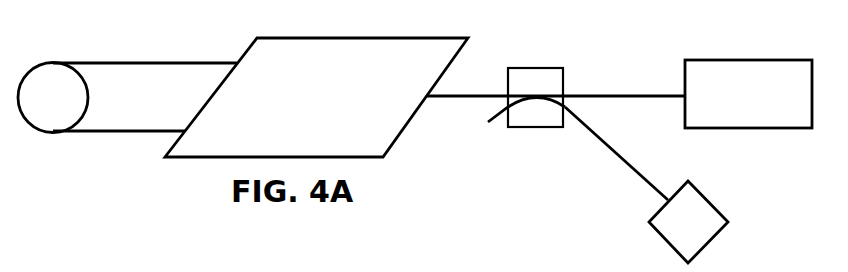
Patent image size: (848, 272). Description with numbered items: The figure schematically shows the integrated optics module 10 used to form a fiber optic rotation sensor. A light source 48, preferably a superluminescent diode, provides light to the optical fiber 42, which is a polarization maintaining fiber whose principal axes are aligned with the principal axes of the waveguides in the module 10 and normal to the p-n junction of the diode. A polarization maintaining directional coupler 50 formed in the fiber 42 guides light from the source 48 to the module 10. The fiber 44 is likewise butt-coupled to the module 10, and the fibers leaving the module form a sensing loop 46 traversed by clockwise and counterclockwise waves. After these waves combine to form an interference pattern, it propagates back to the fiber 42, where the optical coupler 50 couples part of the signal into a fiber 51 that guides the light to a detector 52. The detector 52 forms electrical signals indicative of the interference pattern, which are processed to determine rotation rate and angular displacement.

The integrated optics module 10 is at (407, 157).
The optical fiber 42 is at (613, 93).
The optical fiber 44 is at (115, 62).
The sensing loop 46 is at (45, 62).
The light source 48 is at (710, 60).
The optical coupler 50 is at (528, 68).
The fiber 51 is at (627, 167).
The detector 52 is at (672, 247).